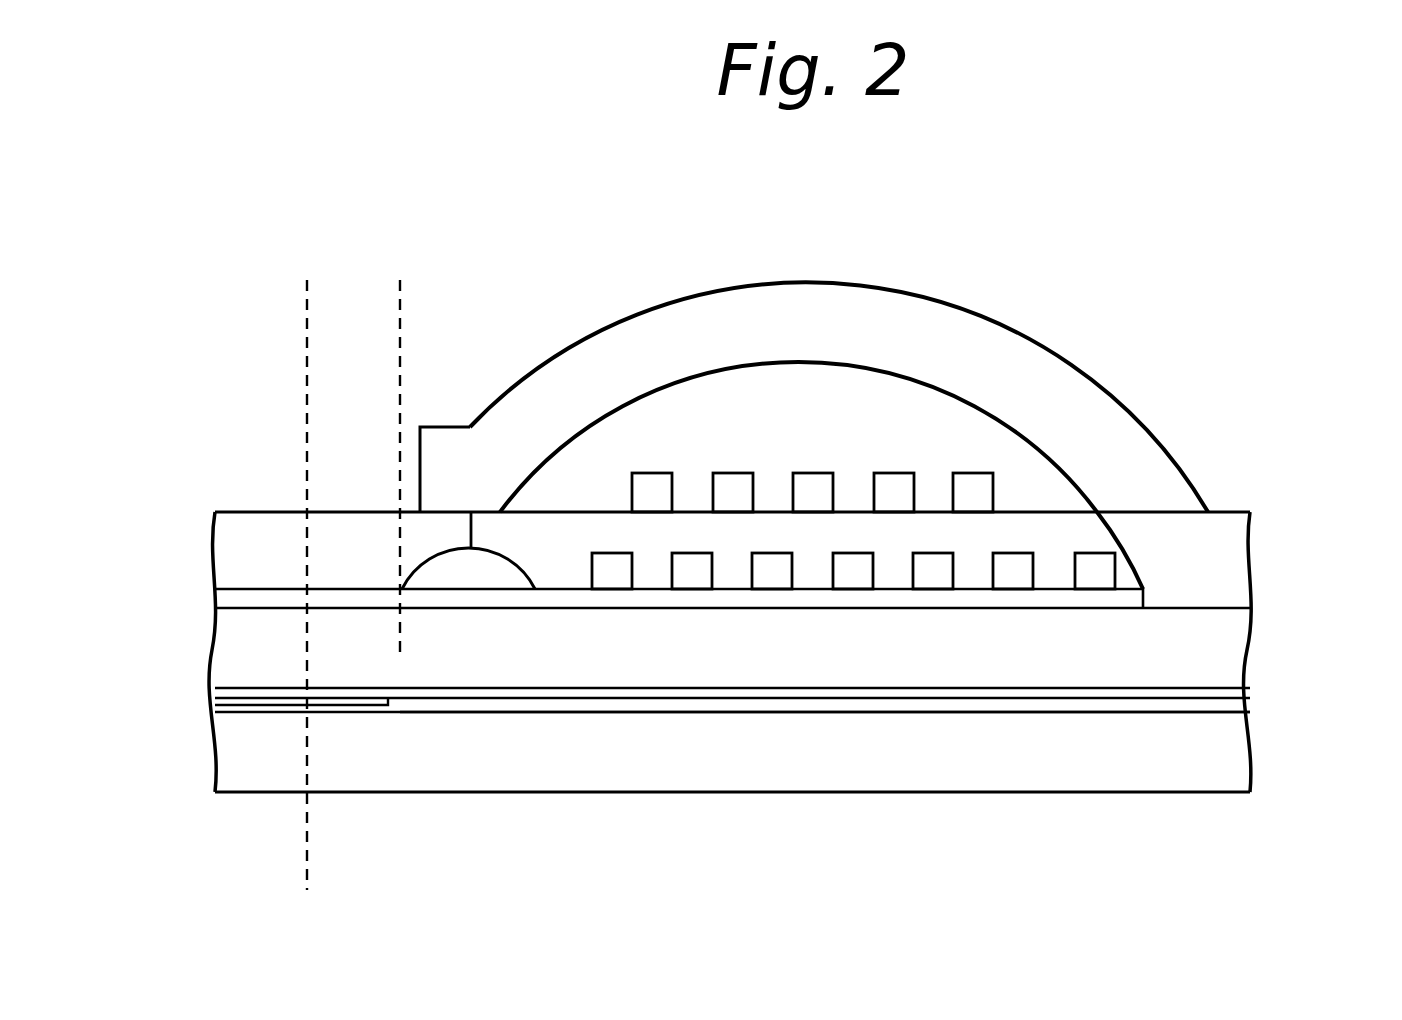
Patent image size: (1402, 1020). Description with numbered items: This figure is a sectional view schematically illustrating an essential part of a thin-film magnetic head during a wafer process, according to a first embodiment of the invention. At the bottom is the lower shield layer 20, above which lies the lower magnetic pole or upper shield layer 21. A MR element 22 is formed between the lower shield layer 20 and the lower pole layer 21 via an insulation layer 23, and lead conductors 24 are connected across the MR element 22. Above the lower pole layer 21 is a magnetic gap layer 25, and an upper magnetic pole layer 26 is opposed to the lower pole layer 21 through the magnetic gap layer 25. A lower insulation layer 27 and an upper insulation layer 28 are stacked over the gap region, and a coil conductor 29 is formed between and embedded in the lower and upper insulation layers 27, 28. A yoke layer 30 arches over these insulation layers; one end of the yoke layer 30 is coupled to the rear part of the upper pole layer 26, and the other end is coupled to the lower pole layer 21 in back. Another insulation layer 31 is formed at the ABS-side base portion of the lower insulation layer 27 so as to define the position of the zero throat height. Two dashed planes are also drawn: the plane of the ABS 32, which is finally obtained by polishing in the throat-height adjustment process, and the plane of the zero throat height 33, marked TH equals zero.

The lower shield layer 20 is at (1230, 765).
The lower magnetic pole or upper shield layer 21 is at (228, 650).
The MR element 22 is at (345, 707).
The insulation layer 23 is at (1237, 690).
The lead conductors 24 is at (592, 705).
The magnetic gap layer 25 is at (228, 594).
The upper magnetic pole layer 26 is at (268, 550).
The lower insulation layer 27 is at (1088, 527).
The upper insulation layer 28 is at (1057, 443).
The coil conductor 29 is at (1020, 563).
The yoke layer 30 is at (615, 347).
The another insulation layer 31 is at (473, 575).
The plane of the ABS 32 is at (305, 321).
The plane of the zero throat height 33 is at (401, 313).